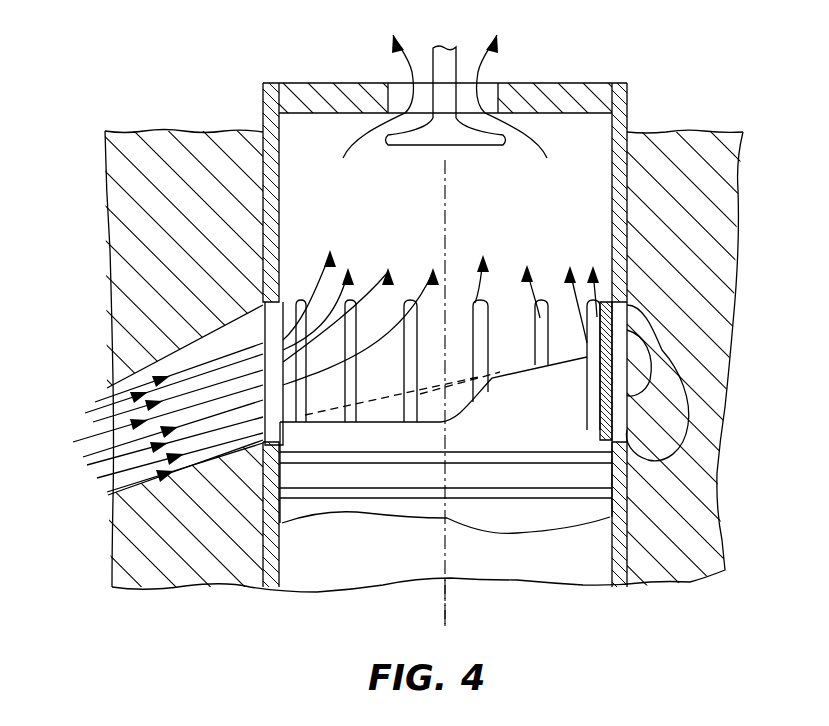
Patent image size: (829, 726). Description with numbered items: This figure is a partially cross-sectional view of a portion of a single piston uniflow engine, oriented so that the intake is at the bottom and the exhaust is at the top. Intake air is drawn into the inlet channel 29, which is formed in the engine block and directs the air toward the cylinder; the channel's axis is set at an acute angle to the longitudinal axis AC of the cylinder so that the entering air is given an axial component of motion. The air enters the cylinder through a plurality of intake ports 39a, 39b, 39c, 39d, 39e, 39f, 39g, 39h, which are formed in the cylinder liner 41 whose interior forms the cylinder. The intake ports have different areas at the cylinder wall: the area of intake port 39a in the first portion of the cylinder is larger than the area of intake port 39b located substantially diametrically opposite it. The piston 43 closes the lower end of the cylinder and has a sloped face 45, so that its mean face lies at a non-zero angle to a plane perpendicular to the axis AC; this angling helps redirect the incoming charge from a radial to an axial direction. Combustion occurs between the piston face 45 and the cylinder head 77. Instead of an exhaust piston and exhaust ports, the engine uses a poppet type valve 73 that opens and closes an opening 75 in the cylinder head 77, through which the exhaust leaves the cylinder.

The inlet channel 29 is at (336, 371).
The intake port 39a is at (283, 306).
The intake port 39b is at (627, 425).
The intake port 39c is at (306, 380).
The intake port 39d is at (356, 365).
The intake port 39e is at (410, 300).
The intake port 39f is at (488, 320).
The intake port 39g is at (543, 300).
The intake port 39h is at (590, 337).
The cylinder liner 41 is at (387, 410).
The piston 43 is at (308, 194).
The piston face 45 is at (654, 400).
The valve 73 is at (417, 147).
The opening 75 is at (399, 88).
The cylinder head 77 is at (536, 97).
The longitudinal axis of the cylinder AC is at (445, 617).